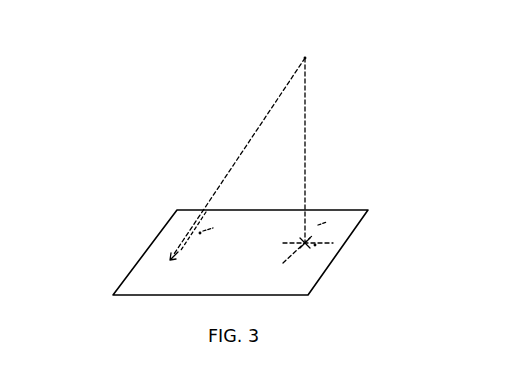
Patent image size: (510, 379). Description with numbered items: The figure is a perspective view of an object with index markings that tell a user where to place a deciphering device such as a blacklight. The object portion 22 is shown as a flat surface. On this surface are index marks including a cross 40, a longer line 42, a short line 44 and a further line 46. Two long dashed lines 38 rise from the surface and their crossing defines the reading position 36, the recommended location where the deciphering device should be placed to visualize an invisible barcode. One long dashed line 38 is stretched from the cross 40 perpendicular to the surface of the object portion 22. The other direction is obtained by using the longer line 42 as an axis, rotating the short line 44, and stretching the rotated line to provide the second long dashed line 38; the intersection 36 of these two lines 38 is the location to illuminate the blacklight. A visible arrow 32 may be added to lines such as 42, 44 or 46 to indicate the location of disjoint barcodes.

The flat portion 22 is at (358, 210).
The visible arrow 32 is at (315, 245).
The reading position 36 is at (305, 57).
The long dashed line 38 is at (257, 128).
The cross 40 is at (305, 245).
The longer line 42 is at (182, 242).
The short line 44 is at (200, 233).
The line 46 is at (322, 227).